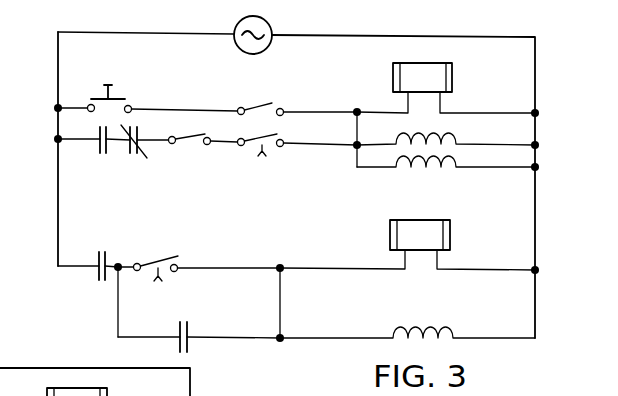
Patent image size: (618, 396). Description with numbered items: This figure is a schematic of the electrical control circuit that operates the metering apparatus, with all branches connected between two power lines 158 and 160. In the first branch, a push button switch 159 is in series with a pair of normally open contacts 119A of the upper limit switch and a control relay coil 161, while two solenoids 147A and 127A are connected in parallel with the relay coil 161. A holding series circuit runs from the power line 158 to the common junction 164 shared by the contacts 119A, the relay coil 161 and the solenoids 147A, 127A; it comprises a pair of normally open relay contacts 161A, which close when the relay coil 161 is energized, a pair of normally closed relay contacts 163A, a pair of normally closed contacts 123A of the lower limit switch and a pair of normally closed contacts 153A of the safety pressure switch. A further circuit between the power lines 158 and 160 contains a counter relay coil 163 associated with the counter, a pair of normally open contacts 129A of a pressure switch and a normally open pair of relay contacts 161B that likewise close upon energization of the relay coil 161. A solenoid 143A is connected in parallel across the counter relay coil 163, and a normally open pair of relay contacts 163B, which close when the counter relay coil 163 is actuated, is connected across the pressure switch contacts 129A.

The power line 158 is at (58, 70).
The push button switch 159 is at (108, 85).
The normally open contacts of upper limit switch 119A is at (283, 70).
The control relay coil 161 is at (395, 72).
The power line 160 is at (535, 71).
The normally open relay contacts 161A is at (108, 152).
The normally closed relay contacts 163A is at (126, 152).
The normally closed contacts of lower limit switch 123A is at (190, 143).
The normally closed contacts of safety pressure switch 153A is at (258, 146).
The common junction 164 is at (357, 146).
The solenoid 147A is at (449, 140).
The solenoid 127A is at (446, 160).
The normally open relay contacts 161B is at (108, 226).
The normally open contacts of pressure switch 129A is at (183, 222).
The counter relay coil 163 is at (400, 220).
The normally open relay contacts 163B is at (186, 325).
The solenoid 143A is at (407, 327).